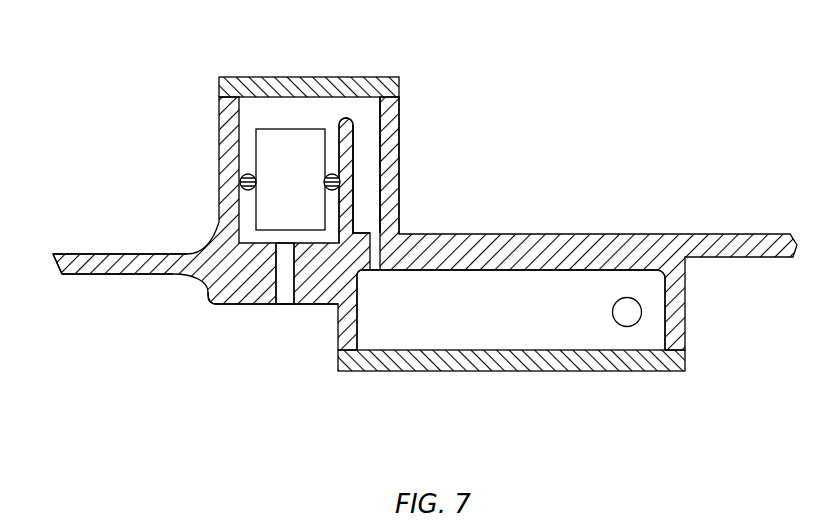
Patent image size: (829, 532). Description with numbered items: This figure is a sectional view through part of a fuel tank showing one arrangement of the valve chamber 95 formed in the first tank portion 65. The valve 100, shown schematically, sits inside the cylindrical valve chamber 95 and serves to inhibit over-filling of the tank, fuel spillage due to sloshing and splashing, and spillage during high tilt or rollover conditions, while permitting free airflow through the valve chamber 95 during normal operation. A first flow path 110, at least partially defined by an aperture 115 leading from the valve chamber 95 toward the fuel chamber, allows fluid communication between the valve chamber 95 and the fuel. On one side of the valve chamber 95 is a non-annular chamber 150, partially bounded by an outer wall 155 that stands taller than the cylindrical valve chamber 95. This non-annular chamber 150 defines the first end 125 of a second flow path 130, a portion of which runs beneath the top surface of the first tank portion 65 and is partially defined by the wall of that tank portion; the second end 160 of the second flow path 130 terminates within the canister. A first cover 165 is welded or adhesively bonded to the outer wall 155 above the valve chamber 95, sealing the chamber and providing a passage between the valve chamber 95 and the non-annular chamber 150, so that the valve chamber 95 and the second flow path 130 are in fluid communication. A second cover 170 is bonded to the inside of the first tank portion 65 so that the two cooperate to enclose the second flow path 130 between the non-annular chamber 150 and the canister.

The first tank portion 65 is at (88, 270).
The valve chamber 95 is at (226, 145).
The valve 100 is at (315, 186).
The first flow path 110 is at (276, 304).
The aperture 115 is at (287, 283).
The first end 125 is at (371, 218).
The second flow path 130 is at (552, 292).
The non-annular chamber 150 is at (368, 140).
The outer wall 155 is at (397, 110).
The second end 160 is at (641, 316).
The first cover 165 is at (258, 77).
The second cover 170 is at (550, 371).